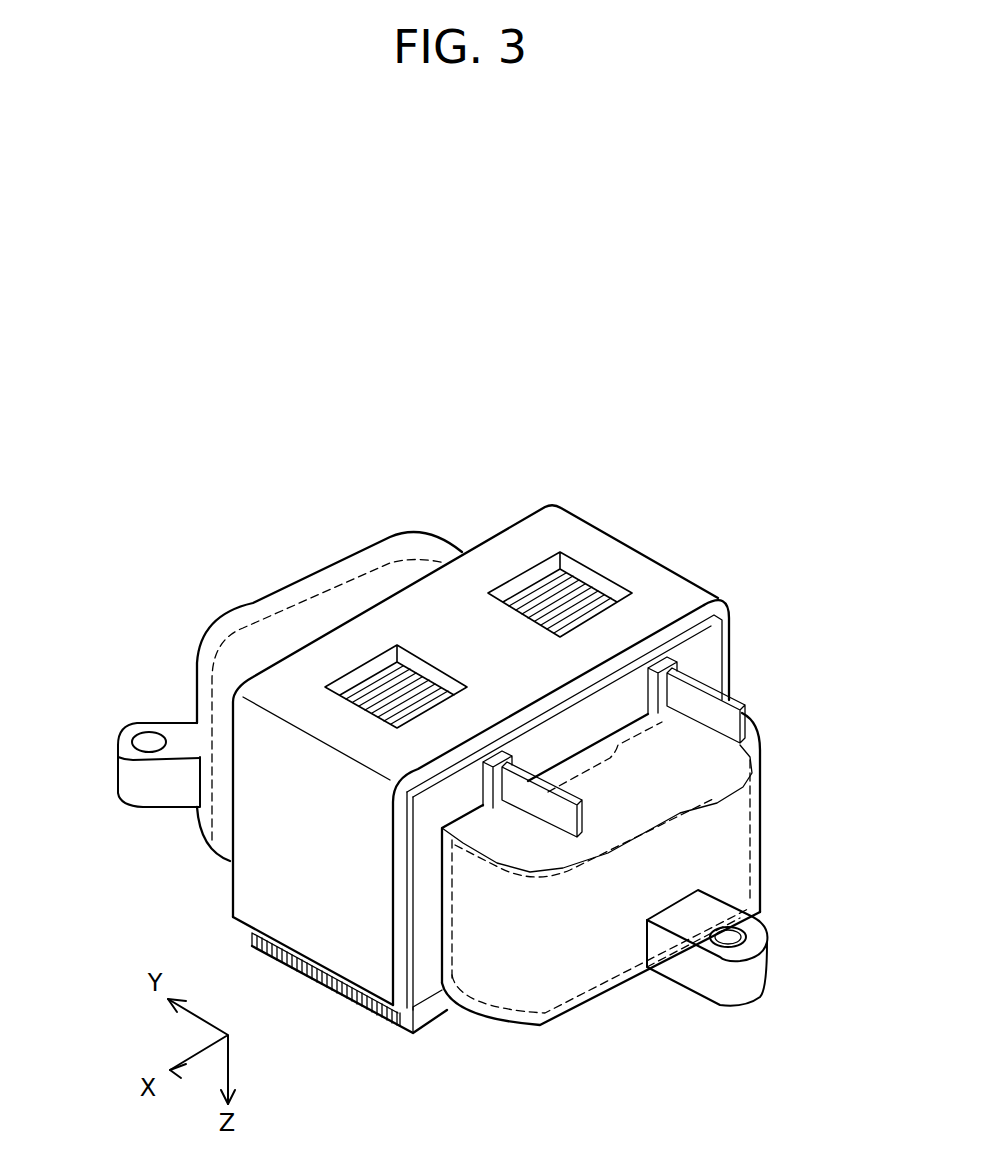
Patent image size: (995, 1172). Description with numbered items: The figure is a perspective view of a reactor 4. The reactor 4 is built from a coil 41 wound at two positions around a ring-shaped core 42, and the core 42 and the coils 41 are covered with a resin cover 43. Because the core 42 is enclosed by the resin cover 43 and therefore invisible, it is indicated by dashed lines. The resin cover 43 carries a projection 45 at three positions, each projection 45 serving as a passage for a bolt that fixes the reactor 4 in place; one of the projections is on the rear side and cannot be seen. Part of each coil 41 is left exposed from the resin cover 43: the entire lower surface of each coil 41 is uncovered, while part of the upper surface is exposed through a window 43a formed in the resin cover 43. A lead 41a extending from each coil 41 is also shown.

The reactor 4 is at (188, 472).
The coil 41 is at (371, 690).
The lead 41a is at (743, 733).
The core 42 is at (257, 627).
The resin cover 43 is at (640, 552).
The window 43a is at (420, 670).
The projection 45 is at (130, 777).